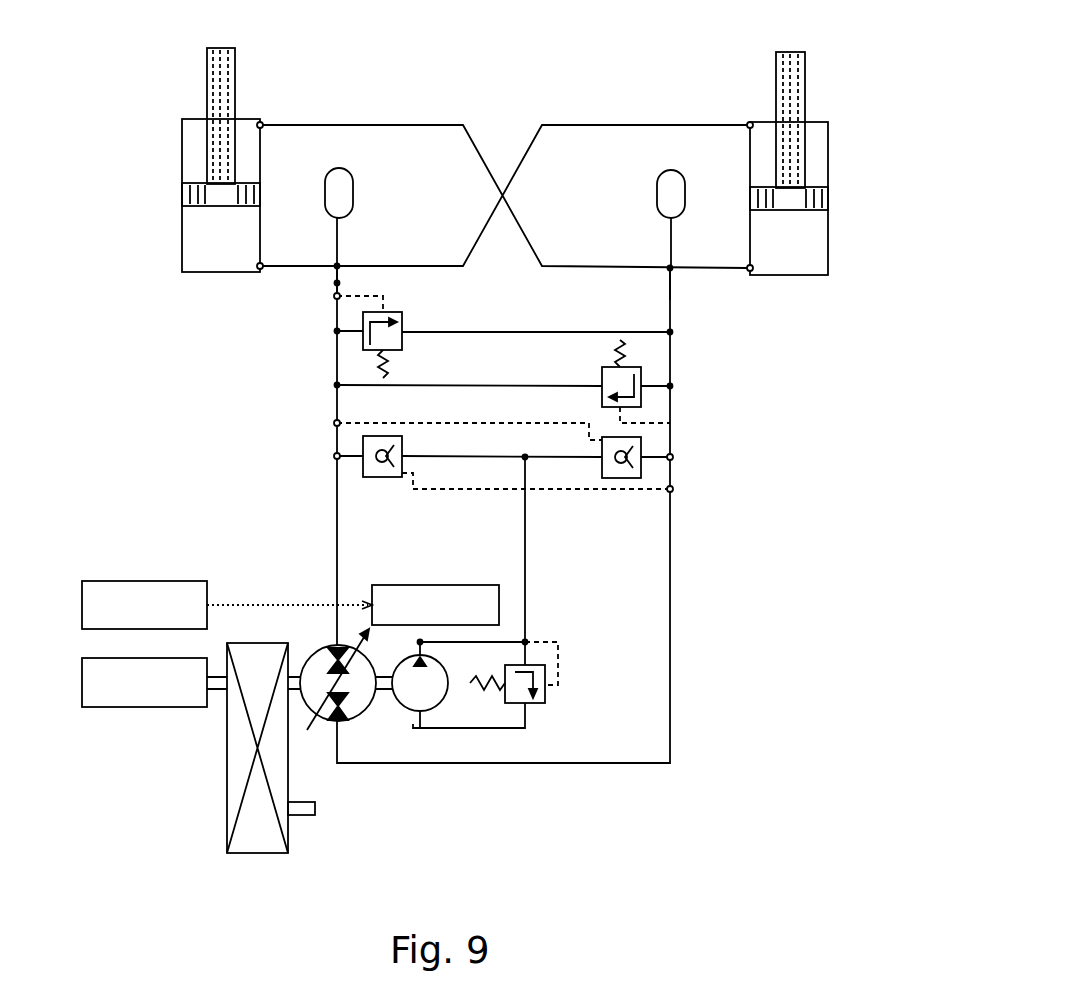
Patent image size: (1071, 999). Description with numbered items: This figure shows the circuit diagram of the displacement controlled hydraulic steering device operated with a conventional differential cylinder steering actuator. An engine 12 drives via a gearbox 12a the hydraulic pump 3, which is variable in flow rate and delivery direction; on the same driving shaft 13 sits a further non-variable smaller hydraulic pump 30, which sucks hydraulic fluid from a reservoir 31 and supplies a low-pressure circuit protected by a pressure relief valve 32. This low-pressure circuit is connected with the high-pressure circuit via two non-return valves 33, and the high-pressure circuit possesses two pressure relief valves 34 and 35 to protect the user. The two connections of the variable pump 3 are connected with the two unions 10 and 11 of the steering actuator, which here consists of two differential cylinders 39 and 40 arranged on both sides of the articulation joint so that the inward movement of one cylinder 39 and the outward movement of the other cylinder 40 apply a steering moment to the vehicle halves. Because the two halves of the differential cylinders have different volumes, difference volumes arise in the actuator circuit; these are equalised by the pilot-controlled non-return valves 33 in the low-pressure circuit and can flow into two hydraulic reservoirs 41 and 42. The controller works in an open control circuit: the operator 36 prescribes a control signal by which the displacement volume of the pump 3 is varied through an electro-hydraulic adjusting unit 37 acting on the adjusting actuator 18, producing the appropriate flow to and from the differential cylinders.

The differential cylinder 39 is at (182, 143).
The differential cylinder 40 is at (828, 134).
The hydraulic reservoir 41 is at (338, 178).
The hydraulic reservoir 42 is at (672, 178).
The union 10 is at (337, 283).
The union 11 is at (670, 293).
The pressure relief valve 35 is at (365, 348).
The pressure relief valve 34 is at (633, 371).
The non-return valve 33 is at (372, 447).
The operator 36 is at (92, 592).
The electro-hydraulic adjusting unit 37 is at (385, 593).
The adjusting actuator 18 is at (365, 640).
The engine 12 is at (103, 690).
The gearbox 12a is at (237, 780).
The hydraulic pump 3 is at (363, 718).
The driving shaft 13 is at (384, 689).
The hydraulic pump 30 is at (430, 695).
The reservoir 31 is at (480, 728).
The pressure relief valve 32 is at (527, 695).